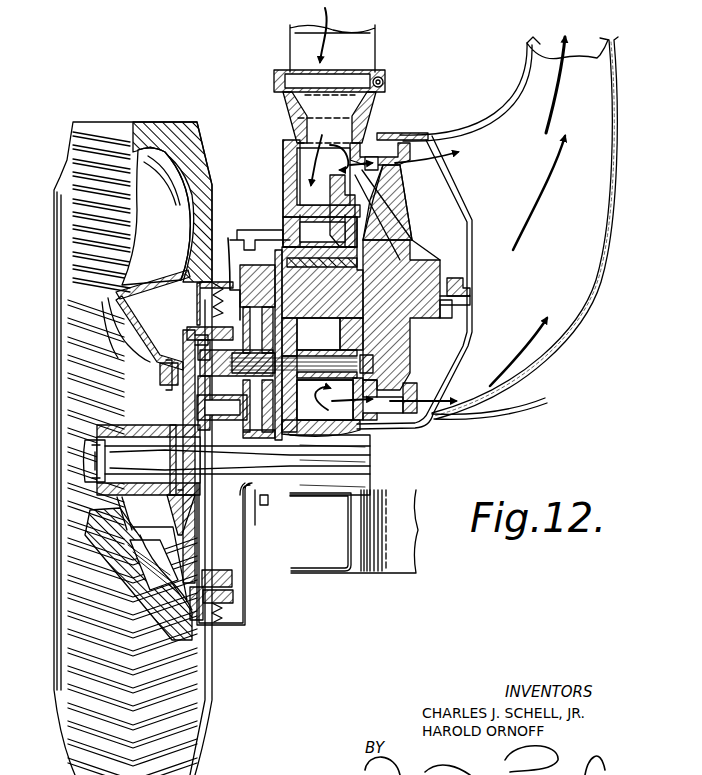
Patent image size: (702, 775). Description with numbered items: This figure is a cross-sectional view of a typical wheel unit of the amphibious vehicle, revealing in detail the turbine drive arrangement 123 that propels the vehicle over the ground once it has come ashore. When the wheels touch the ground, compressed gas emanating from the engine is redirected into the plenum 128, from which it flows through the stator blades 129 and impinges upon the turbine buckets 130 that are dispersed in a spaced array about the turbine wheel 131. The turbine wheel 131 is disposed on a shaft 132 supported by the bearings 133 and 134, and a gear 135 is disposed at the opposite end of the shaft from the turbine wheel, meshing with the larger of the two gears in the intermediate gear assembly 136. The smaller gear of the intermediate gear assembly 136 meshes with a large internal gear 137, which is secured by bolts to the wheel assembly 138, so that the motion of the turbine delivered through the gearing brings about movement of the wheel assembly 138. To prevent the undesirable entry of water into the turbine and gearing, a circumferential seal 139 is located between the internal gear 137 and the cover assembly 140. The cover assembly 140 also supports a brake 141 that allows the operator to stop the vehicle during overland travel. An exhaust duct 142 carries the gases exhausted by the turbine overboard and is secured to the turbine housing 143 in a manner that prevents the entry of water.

The turbine drive arrangement 123 is at (365, 125).
The plenum 128 is at (298, 170).
The stator blades 129 is at (385, 130).
The turbine buckets 130 is at (430, 128).
The turbine wheel 131 is at (420, 332).
The shaft 132 is at (410, 252).
The bearing 133 is at (466, 283).
The bearing 134 is at (435, 235).
The gear 135 is at (262, 250).
The intermediate gear assembly 136 is at (279, 492).
The large internal gear 137 is at (217, 567).
The wheel assembly 138 is at (170, 265).
The circumferential seal 139 is at (228, 648).
The cover assembly 140 is at (232, 626).
The brake 141 is at (238, 596).
The exhaust duct 142 is at (590, 66).
The turbine housing 143 is at (292, 142).